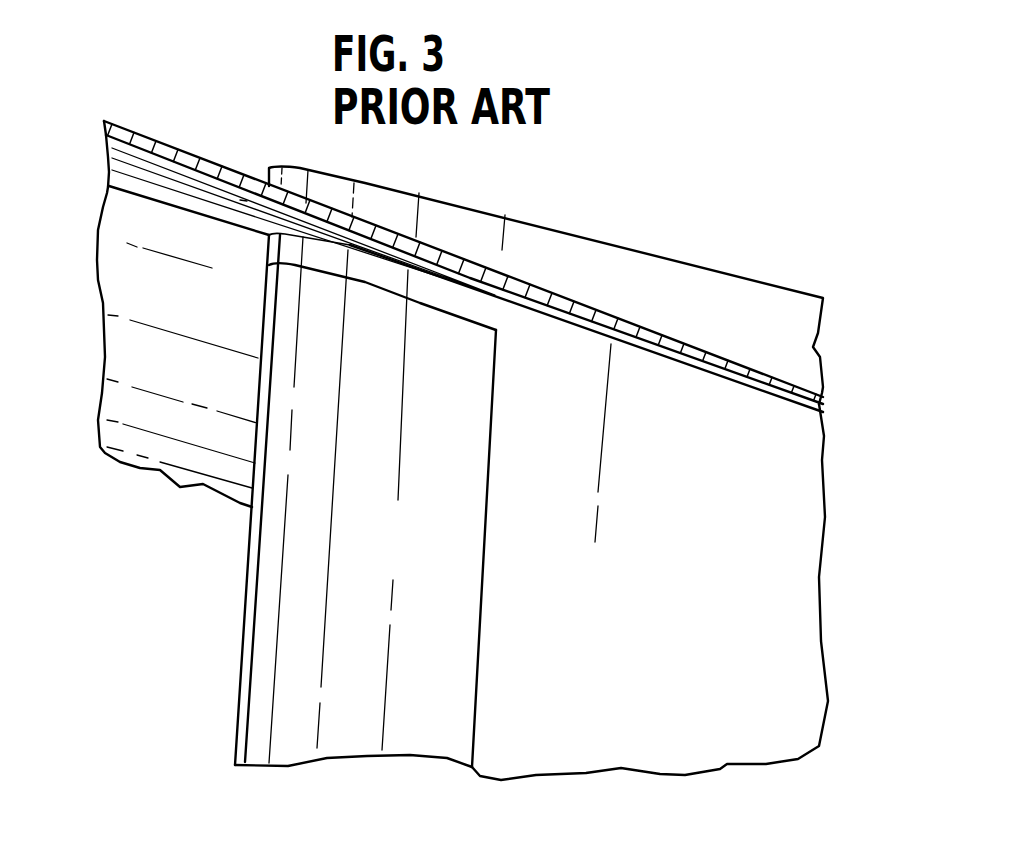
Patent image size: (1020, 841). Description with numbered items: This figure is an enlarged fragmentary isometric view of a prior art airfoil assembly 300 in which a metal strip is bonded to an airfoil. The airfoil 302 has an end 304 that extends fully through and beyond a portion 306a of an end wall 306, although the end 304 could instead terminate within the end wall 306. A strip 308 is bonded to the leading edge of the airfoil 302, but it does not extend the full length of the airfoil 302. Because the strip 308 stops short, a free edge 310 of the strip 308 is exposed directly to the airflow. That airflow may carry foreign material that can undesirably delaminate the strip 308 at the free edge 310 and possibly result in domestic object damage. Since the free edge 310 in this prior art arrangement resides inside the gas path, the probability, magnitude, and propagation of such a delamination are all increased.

The airfoil assembly 300 is at (260, 150).
The airfoil 302 is at (731, 554).
The end 304 is at (767, 281).
The end wall 306 is at (127, 285).
The portion 306a is at (813, 392).
The strip 308 is at (438, 563).
The free edge 310 is at (497, 328).